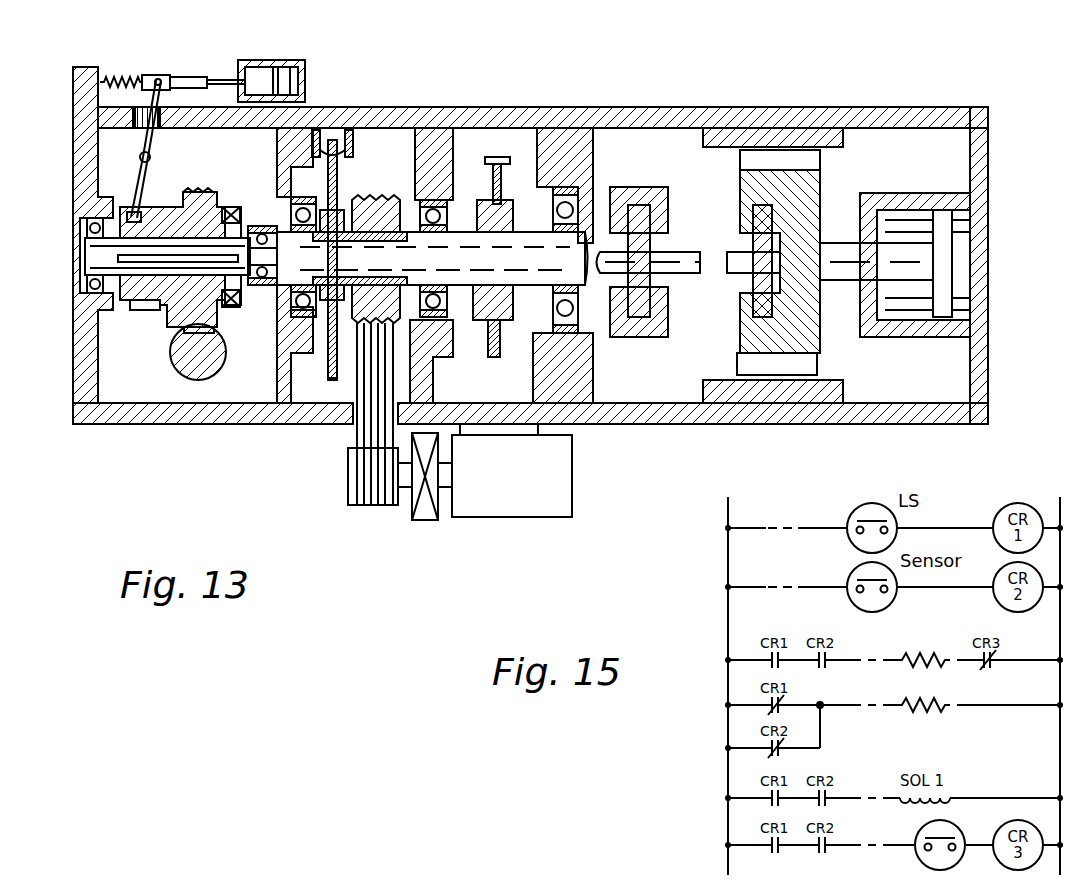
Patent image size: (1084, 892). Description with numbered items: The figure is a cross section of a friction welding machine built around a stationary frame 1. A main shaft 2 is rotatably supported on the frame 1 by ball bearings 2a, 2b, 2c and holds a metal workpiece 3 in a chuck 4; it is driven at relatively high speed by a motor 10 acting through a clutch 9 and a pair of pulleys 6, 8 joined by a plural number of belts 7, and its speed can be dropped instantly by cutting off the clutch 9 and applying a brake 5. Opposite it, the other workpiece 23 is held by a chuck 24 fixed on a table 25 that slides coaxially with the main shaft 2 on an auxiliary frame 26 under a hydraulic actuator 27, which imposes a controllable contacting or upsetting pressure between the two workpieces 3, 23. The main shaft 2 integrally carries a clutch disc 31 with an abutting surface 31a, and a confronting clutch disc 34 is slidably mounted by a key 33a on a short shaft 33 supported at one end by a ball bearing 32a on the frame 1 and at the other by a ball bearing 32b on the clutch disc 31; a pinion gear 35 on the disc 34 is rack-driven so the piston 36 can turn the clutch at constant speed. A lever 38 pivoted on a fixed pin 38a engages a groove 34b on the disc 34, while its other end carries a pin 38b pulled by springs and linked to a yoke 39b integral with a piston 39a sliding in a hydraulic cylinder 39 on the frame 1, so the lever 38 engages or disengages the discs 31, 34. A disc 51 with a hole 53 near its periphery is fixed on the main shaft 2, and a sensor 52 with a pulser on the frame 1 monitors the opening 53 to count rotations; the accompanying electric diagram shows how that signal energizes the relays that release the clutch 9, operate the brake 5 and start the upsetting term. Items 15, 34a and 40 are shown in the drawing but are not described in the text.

The stationary frame 1 is at (490, 107).
The main shaft 2 is at (462, 277).
The ball bearing 2a is at (568, 287).
The ball bearing 2b is at (447, 300).
The ball bearing 2c is at (340, 290).
The metal workpiece 3 is at (685, 250).
The chuck 4 is at (640, 185).
The brake 5 is at (503, 193).
The pulley 6 is at (405, 220).
The belts 7 is at (350, 440).
The pulley 8 is at (348, 480).
The clutch 9 is at (420, 520).
The motor 10 is at (512, 517).
The clutch assembly 15 is at (205, 382).
The workpiece 23 is at (735, 275).
The chuck 24 is at (752, 305).
The table 25 is at (738, 187).
The auxiliary frame 26 is at (845, 147).
The hydraulic actuator 27 is at (918, 193).
The clutch disc 31 is at (272, 338).
The abutting surface 31a is at (232, 307).
The ball bearing 32a is at (86, 287).
The ball bearing 32b is at (277, 240).
The short shaft 33 is at (160, 305).
The key 33a is at (118, 250).
The clutch disc 34 is at (160, 200).
The sleeve ring 34a is at (248, 192).
The groove 34b is at (137, 310).
The pinion gear 35 is at (205, 192).
The piston 36 is at (192, 380).
The lever 38 is at (160, 130).
The fixed pin 38a is at (137, 157).
The pin 38b is at (160, 74).
The hydraulic cylinder 39 is at (270, 60).
The piston 39a is at (290, 95).
The yoke 39b is at (205, 76).
The spring 40 is at (120, 72).
The disc 51 is at (328, 362).
The sensor 52 is at (353, 150).
The hole 53 is at (338, 178).